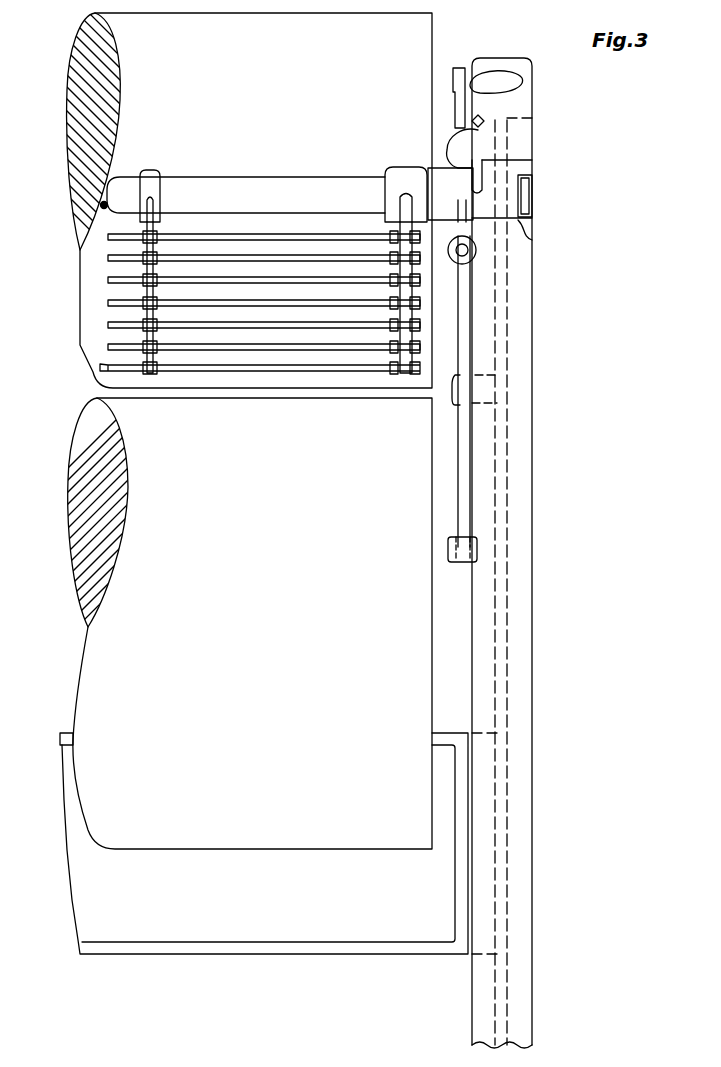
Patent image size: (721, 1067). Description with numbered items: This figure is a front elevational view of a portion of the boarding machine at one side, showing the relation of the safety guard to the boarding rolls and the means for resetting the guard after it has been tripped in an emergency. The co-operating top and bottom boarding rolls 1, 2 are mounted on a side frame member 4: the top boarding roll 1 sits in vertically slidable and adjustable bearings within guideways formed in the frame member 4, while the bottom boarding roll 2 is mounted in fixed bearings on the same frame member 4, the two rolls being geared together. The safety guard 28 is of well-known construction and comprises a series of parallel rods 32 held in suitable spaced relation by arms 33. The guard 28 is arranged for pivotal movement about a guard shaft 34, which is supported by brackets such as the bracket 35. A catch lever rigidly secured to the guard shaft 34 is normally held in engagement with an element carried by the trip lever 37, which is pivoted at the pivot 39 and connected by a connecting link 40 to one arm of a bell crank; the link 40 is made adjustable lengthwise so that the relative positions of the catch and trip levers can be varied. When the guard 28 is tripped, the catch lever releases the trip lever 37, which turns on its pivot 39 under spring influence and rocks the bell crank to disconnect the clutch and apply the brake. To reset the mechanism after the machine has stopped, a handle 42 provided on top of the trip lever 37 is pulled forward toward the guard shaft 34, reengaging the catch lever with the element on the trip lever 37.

The top boarding roll 1 is at (75, 113).
The bottom boarding roll 2 is at (68, 495).
The side frame member 4 is at (530, 490).
The safety guard 28 is at (238, 372).
The parallel rods 32 is at (105, 283).
The arms 33 is at (108, 340).
The guard shaft 34 is at (270, 185).
The bracket 35 is at (510, 175).
The trip lever 37 is at (468, 355).
The pivot 39 is at (487, 395).
The connecting link 40 is at (448, 548).
The handle 42 is at (495, 75).